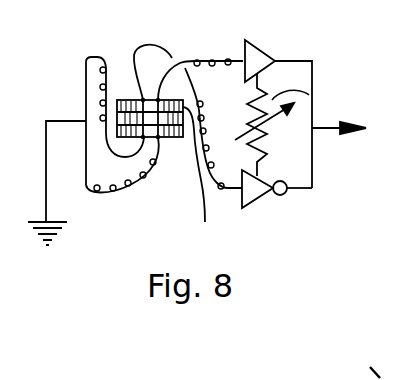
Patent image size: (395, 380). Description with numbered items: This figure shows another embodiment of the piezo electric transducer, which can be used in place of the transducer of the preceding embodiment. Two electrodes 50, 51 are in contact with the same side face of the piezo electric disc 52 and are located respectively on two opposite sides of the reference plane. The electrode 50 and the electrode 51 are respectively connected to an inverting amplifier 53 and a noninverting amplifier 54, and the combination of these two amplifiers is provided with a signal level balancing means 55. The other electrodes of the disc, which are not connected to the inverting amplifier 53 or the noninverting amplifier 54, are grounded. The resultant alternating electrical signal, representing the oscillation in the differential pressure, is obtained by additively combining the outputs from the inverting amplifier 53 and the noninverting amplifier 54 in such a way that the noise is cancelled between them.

The electrode 50 is at (118, 100).
The electrode 51 is at (200, 155).
The piezo electric disc 52 is at (157, 138).
The inverting amplifier 53 is at (262, 205).
The noninverting amplifier 54 is at (262, 43).
The signal level balancing means 55 is at (316, 93).